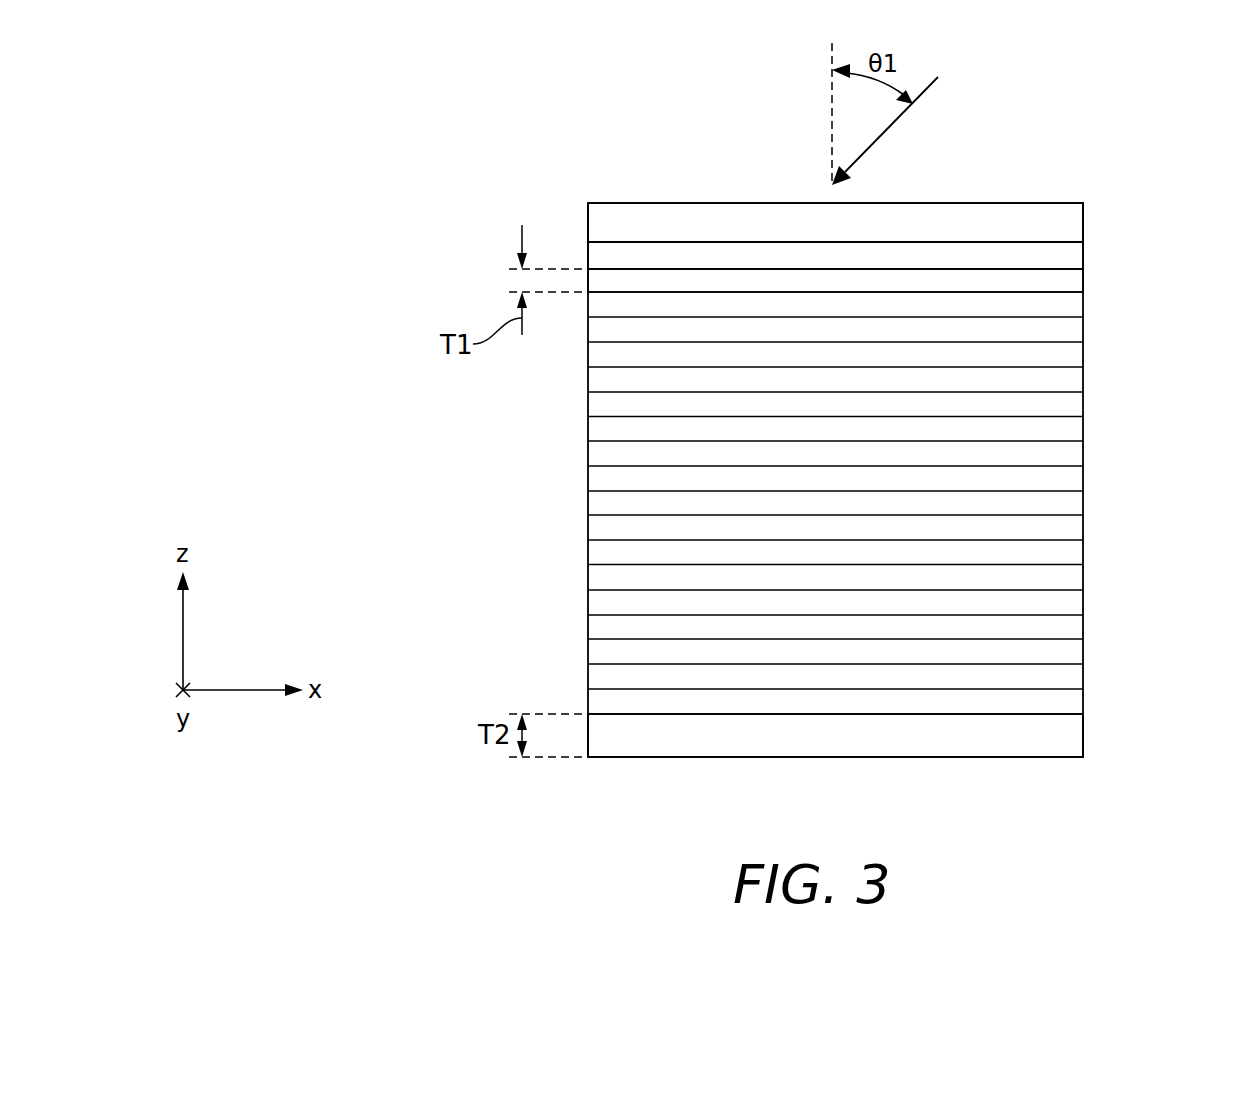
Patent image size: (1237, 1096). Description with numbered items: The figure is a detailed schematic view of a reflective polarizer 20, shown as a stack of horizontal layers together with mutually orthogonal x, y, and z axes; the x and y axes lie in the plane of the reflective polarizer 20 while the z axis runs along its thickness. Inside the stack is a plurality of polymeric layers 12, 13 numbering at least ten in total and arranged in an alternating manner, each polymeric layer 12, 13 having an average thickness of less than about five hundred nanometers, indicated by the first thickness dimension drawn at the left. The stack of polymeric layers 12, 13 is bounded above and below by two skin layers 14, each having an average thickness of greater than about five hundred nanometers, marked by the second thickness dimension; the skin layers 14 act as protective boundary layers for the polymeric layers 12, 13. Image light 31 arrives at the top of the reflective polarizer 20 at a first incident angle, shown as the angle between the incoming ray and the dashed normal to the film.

The reflective polarizer 20 is at (572, 132).
The skin layer 14 is at (1045, 222).
The polymeric layer 12 is at (1060, 255).
The polymeric layer 13 is at (1062, 279).
The image light 31 is at (903, 110).